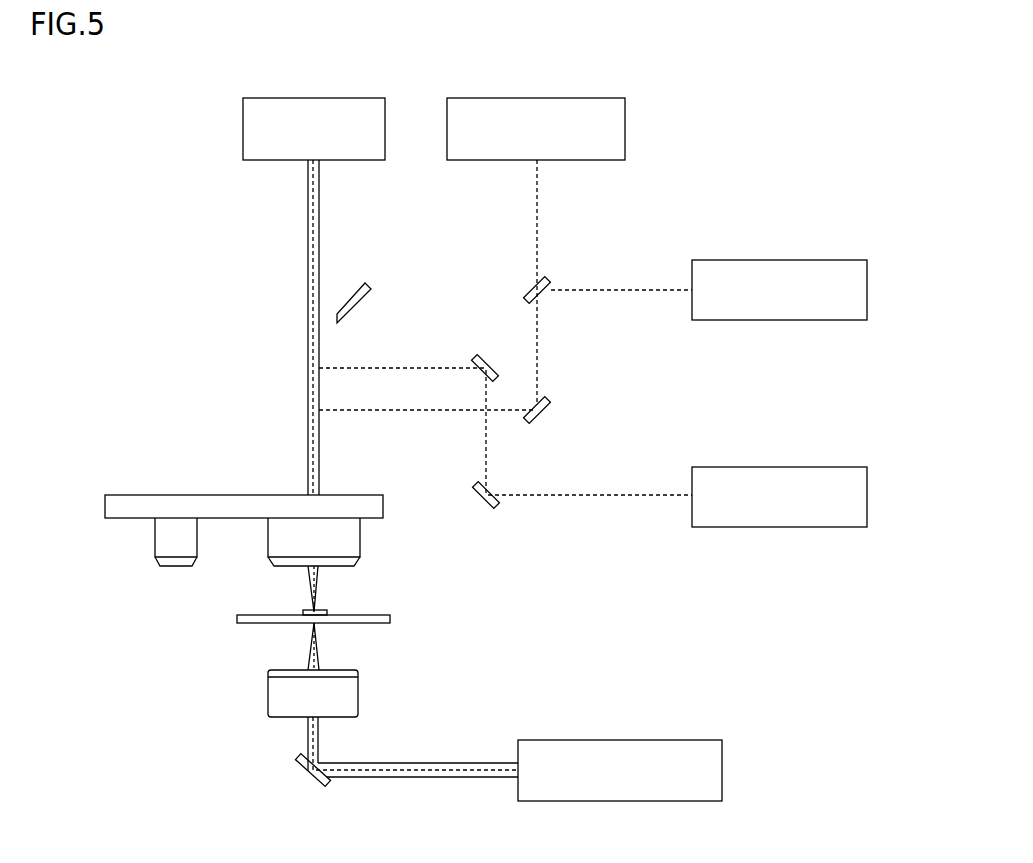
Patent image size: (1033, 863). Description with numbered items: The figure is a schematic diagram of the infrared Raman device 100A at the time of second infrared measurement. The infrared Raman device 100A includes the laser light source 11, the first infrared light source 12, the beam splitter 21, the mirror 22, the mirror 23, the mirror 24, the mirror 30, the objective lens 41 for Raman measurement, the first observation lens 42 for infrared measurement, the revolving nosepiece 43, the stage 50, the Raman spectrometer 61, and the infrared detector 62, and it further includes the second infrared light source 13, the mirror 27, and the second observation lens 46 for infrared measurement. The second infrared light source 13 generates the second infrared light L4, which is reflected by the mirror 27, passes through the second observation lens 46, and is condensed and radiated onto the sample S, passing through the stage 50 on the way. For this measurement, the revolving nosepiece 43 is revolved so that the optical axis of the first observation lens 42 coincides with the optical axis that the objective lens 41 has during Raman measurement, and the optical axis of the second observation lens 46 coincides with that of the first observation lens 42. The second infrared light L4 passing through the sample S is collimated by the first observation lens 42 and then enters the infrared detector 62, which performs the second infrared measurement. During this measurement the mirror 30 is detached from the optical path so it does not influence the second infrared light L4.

The infrared Raman device 100A is at (771, 89).
The infrared detector 62 is at (271, 103).
The Raman spectrometer 61 is at (577, 103).
The laser light source 11 is at (708, 268).
The first infrared light source 12 is at (704, 472).
The second infrared light source 13 is at (531, 745).
The mirror 30 is at (371, 291).
The beam splitter 21 is at (525, 297).
The mirror 22 is at (536, 422).
The mirror 23 is at (491, 512).
The mirror 24 is at (481, 356).
The mirror 27 is at (318, 788).
The revolving nosepiece 43 is at (122, 503).
The objective lens for Raman measurement 41 is at (162, 549).
The first observation lens for infrared measurement 42 is at (346, 542).
The second observation lens for infrared measurement 46 is at (272, 695).
The stage 50 is at (382, 614).
The sample S is at (303, 612).
The second infrared light L4 is at (308, 290).